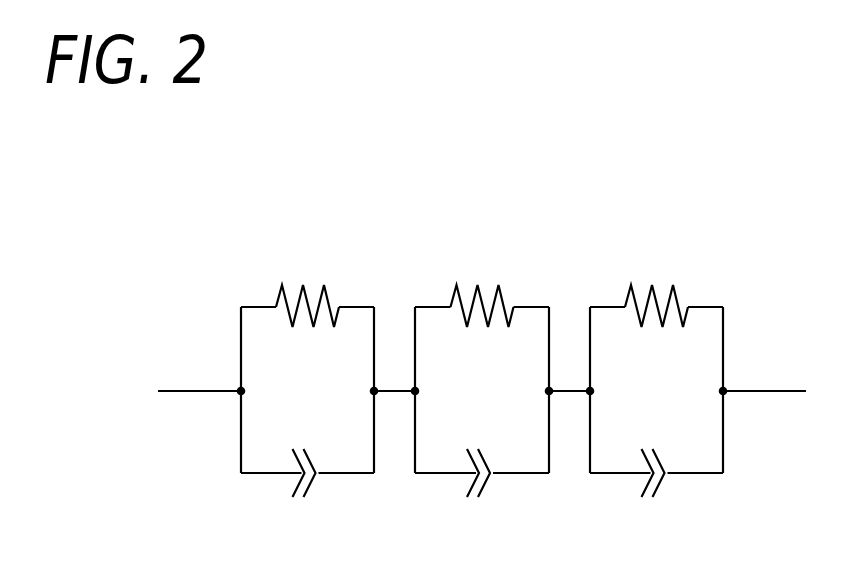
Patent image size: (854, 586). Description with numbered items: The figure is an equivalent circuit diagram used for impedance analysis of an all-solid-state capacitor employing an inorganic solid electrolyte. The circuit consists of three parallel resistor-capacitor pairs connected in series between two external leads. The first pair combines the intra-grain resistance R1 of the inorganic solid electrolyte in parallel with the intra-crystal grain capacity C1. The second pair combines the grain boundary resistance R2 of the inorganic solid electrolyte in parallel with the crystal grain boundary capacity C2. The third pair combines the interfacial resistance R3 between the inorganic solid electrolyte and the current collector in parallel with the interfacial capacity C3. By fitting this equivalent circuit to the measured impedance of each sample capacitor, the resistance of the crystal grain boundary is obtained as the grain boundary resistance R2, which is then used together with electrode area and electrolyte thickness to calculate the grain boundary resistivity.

The intra-grain resistance R1 is at (307, 278).
The grain boundary resistance R2 is at (482, 278).
The interfacial resistance R3 is at (656, 278).
The intra-crystal grain capacity C1 is at (306, 498).
The crystal grain boundary capacity C2 is at (480, 498).
The interfacial capacity C3 is at (655, 498).